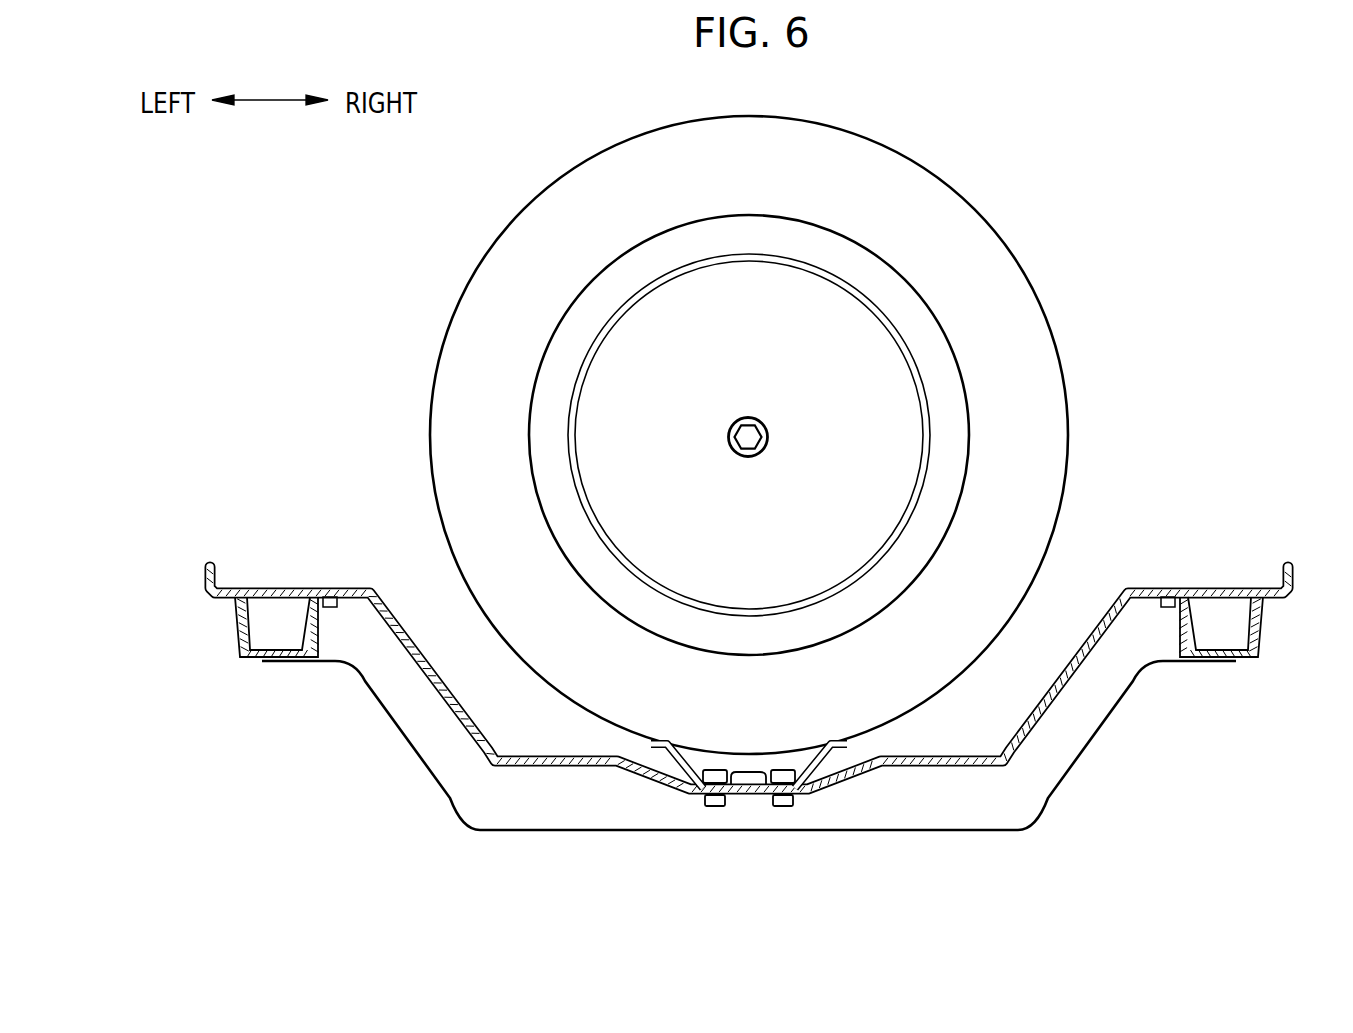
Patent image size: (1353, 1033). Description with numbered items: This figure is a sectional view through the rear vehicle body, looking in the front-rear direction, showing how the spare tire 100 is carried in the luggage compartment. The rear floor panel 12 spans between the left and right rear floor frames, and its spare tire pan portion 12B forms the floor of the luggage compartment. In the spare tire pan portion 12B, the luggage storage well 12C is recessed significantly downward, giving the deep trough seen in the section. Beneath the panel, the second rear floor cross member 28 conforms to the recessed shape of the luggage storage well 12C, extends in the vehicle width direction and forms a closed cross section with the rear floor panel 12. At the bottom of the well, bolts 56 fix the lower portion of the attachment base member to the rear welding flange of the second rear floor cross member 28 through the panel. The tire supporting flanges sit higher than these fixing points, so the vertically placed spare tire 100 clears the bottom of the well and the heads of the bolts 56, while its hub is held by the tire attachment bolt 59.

The spare tire 100 is at (1012, 306).
The tire attachment bolt 59 is at (752, 435).
The second rear floor cross member 28 is at (943, 812).
The rear floor panel 12 is at (765, 649).
The spare tire pan portion 12B is at (1147, 589).
The luggage storage well 12C is at (973, 743).
The bolt 56 is at (743, 796).